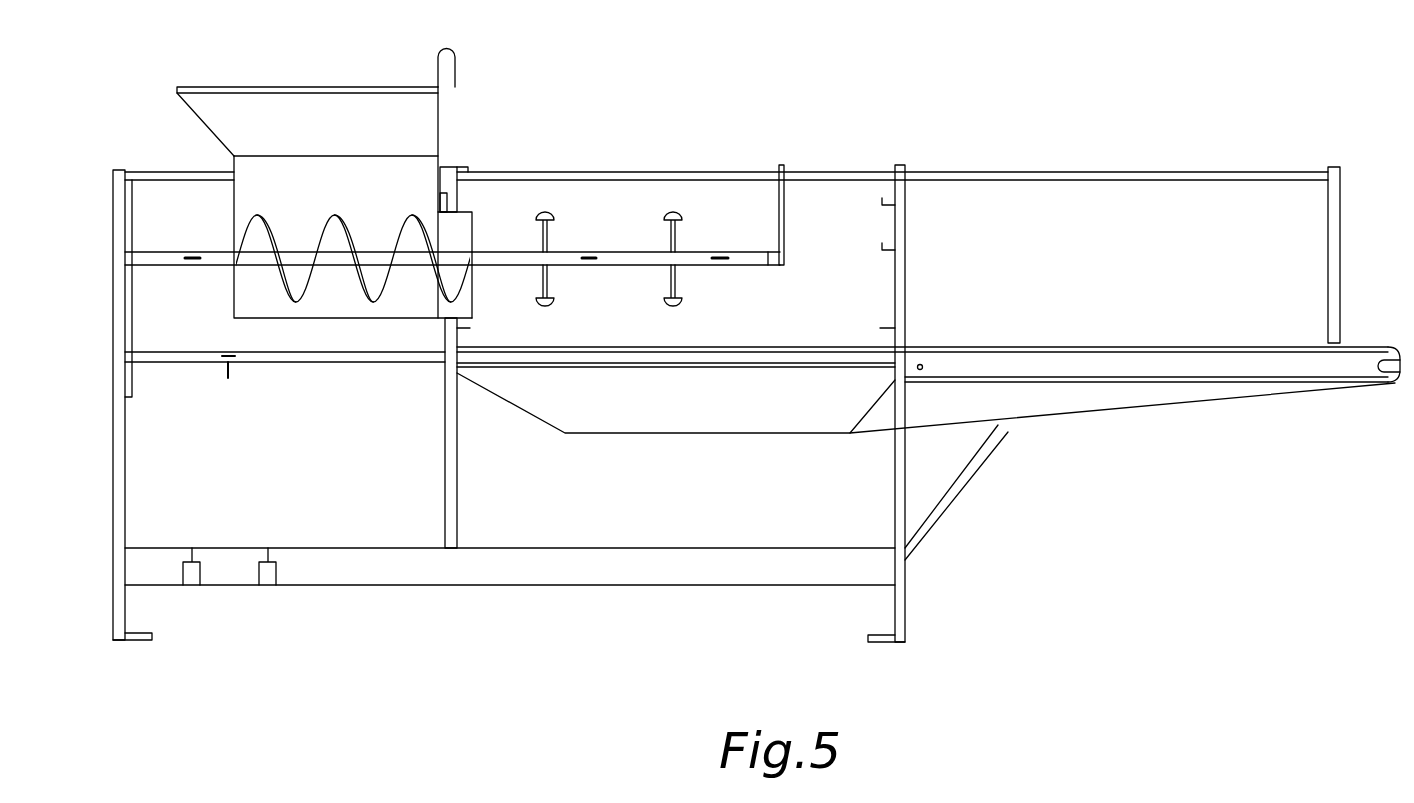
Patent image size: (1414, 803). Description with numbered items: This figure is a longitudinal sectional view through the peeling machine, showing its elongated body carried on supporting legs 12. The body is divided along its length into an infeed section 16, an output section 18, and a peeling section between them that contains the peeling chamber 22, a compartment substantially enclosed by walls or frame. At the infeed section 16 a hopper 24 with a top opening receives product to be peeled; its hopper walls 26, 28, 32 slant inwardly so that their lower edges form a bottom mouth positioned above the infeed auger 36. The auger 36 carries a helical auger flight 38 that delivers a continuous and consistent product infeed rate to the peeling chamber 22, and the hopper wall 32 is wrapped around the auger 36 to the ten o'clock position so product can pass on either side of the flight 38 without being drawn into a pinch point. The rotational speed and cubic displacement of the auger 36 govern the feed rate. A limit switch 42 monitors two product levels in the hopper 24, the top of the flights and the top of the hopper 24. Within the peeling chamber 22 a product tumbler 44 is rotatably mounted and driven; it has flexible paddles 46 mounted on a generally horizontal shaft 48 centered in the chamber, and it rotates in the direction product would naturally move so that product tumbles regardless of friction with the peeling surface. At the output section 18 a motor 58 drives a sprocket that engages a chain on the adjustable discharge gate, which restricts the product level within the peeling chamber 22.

The legs 12 is at (113, 608).
The infeed section 16 is at (115, 170).
The output section 18 is at (1110, 215).
The peeling chamber 22 is at (608, 213).
The hopper 24 is at (283, 88).
The hopper wall 26 is at (308, 141).
The hopper wall 28 is at (205, 124).
The hopper wall 32 is at (440, 125).
The infeed auger 36 is at (293, 302).
The auger flight 38 is at (330, 213).
The limit switch 42 is at (456, 60).
The product tumbler 44 is at (742, 250).
The flexible paddles 46 is at (543, 212).
The horizontal shaft 48 is at (612, 268).
The motor 58 is at (1170, 347).